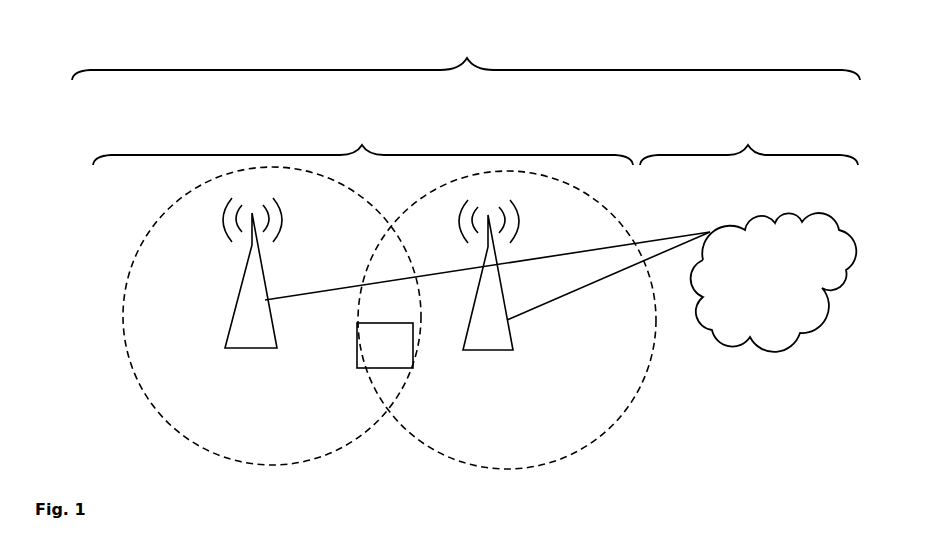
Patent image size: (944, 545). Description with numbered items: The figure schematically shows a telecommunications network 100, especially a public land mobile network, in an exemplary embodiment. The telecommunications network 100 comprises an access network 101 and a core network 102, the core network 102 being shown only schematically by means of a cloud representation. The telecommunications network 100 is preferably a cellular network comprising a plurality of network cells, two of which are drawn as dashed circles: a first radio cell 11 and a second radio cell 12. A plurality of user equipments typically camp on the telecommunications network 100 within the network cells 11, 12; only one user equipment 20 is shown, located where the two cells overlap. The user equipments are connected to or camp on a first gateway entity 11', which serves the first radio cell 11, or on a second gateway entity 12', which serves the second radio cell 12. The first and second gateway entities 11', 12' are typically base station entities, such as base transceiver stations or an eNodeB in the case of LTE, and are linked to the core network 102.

The telecommunications network 100 is at (466, 56).
The access network 101 is at (363, 142).
The core network 102 is at (749, 237).
The first radio cell 11 is at (250, 316).
The second radio cell 12 is at (507, 346).
The first gateway entity 11' is at (466, 273).
The second gateway entity 12' is at (584, 275).
The user equipment 20 is at (385, 345).